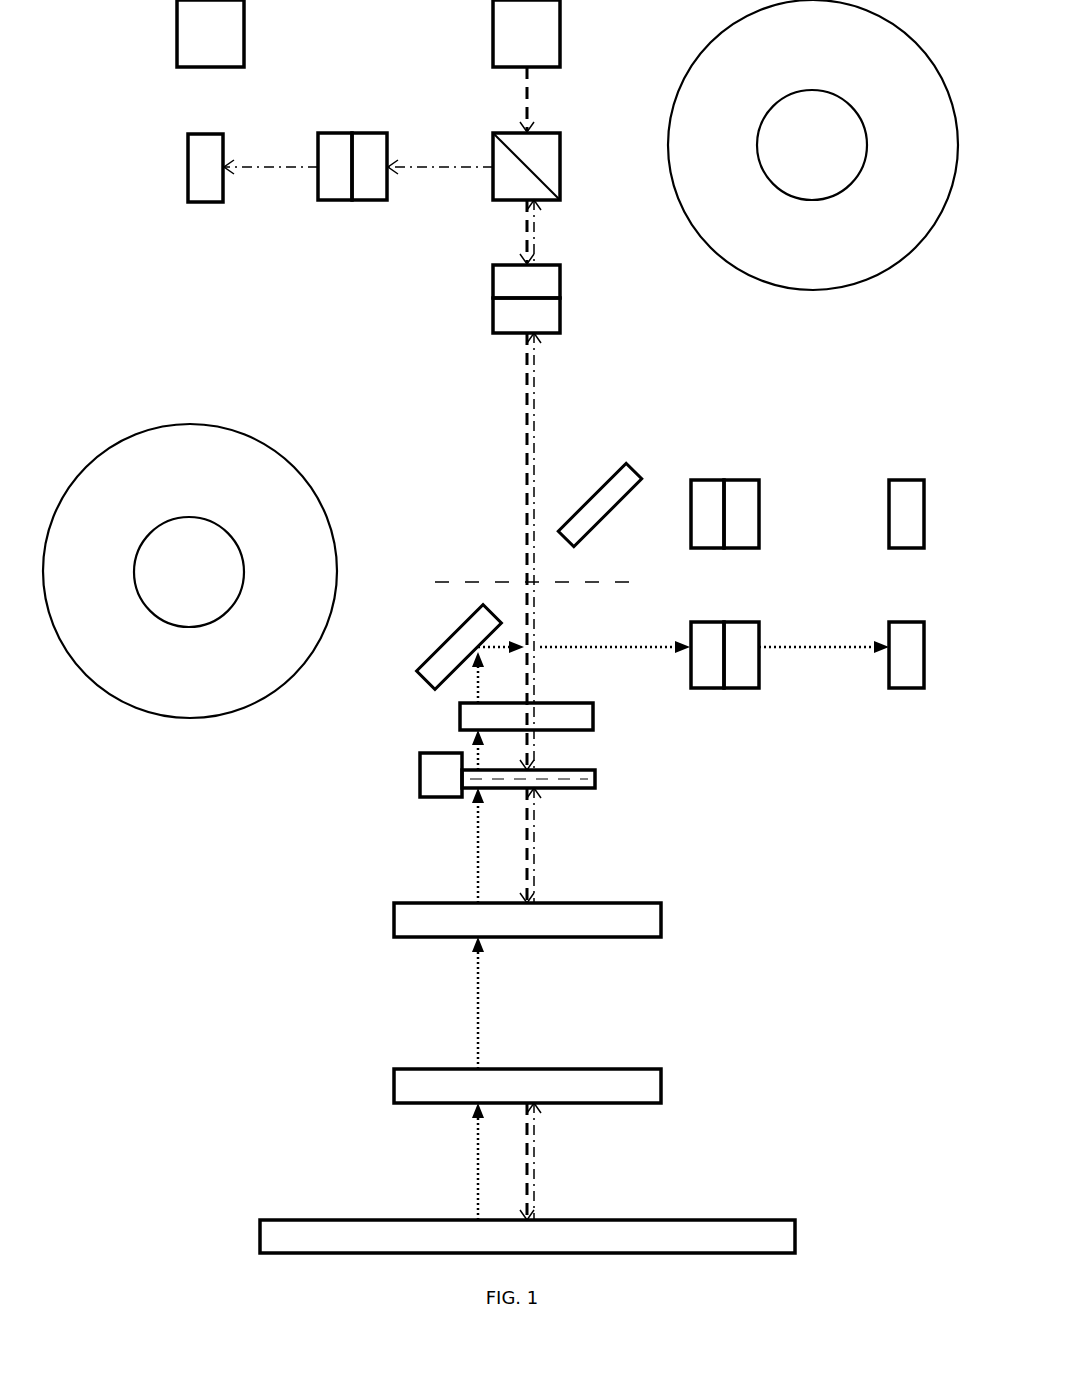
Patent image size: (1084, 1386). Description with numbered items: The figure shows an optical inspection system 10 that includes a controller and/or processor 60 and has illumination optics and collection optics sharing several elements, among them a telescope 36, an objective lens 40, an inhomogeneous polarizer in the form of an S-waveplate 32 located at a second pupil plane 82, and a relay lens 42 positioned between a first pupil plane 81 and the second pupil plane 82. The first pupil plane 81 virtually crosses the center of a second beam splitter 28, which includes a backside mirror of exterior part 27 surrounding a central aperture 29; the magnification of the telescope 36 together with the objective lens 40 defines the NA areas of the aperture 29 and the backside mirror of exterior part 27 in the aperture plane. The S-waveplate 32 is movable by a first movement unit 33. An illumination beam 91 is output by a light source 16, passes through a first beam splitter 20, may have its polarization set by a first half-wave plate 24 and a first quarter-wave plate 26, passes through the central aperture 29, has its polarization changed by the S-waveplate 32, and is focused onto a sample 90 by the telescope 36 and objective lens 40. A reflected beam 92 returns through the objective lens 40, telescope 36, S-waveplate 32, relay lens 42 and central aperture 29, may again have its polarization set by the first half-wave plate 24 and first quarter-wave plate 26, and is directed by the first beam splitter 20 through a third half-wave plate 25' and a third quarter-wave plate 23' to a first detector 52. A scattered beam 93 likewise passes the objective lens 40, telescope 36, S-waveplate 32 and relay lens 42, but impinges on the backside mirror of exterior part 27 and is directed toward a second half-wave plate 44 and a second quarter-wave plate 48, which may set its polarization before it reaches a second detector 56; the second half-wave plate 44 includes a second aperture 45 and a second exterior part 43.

The optical inspection system 10 is at (218, 1140).
The light source 16 is at (526, 33).
The first beam splitter 20 is at (560, 167).
The third quarter-wave plate 23' is at (318, 205).
The third half-wave plate 25' is at (365, 205).
The first half-wave plate 24 is at (560, 281).
The first quarter-wave plate 26 is at (560, 313).
The backside mirror of exterior part 27 is at (690, 415).
The second beam splitter 28 is at (160, 720).
The central aperture 29 is at (189, 572).
The S-waveplate 32 is at (597, 788).
The first movement unit 33 is at (441, 775).
The telescope 36 is at (661, 919).
The objective lens 40 is at (661, 1085).
The relay lens 42 is at (526, 716).
The second exterior part 43 is at (813, 145).
The second half-wave plate 44 is at (784, 304).
The second aperture 45 is at (812, 145).
The second quarter-wave plate 48 is at (745, 480).
The first detector 52 is at (188, 170).
The second detector 56 is at (898, 480).
The controller and/or processor 60 is at (210, 33).
The first pupil plane 81 is at (520, 582).
The second pupil plane 82 is at (549, 780).
The sample 90 is at (795, 1227).
The illumination beam 91 is at (531, 98).
The reflected beam 92 is at (443, 166).
The scattered beam 93 is at (820, 650).